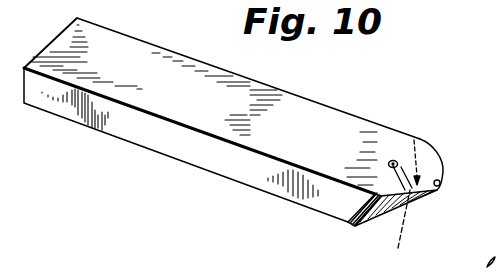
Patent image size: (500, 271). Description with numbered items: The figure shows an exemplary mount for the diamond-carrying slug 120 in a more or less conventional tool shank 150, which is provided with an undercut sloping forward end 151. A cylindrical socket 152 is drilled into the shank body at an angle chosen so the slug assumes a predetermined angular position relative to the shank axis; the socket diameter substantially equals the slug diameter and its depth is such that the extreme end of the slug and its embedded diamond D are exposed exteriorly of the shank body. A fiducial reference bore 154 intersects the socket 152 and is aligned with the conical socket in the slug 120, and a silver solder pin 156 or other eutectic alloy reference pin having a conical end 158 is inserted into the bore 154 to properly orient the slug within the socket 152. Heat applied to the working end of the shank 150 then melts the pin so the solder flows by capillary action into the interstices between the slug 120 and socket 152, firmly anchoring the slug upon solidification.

The tool shank 150 is at (140, 135).
The undercut sloping forward end 151 is at (410, 196).
The cylindrical socket 152 is at (396, 230).
The fiducial reference bore 154 is at (400, 170).
The silver solder pin 156 is at (393, 161).
The conical end 158 is at (420, 202).
The diamond-carrying slug 120 is at (426, 165).
The diamond D is at (499, 81).